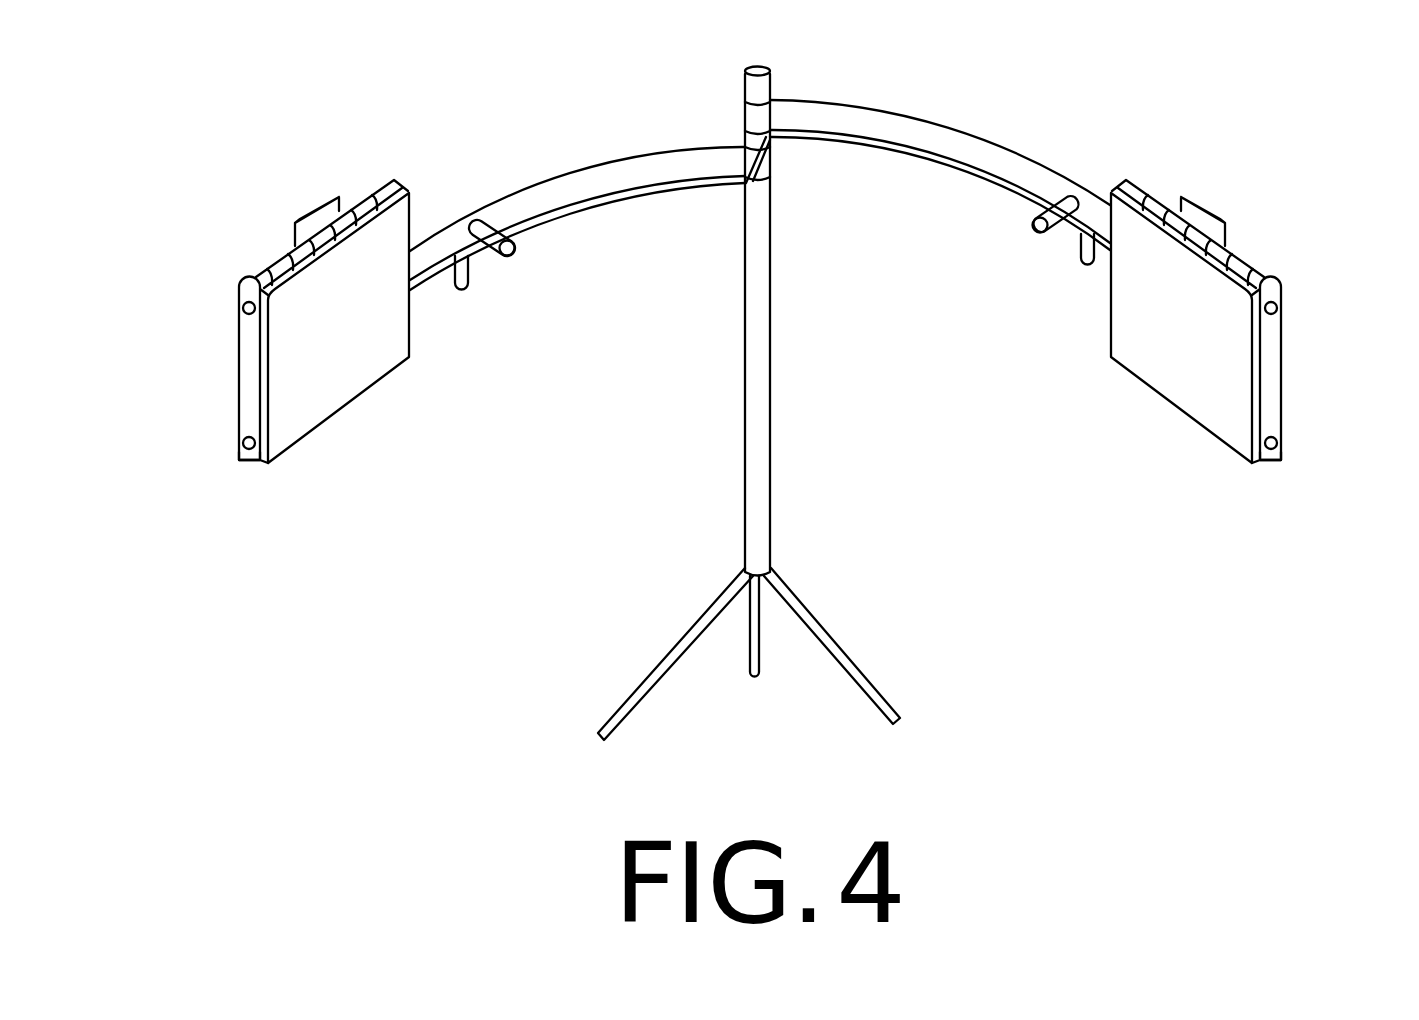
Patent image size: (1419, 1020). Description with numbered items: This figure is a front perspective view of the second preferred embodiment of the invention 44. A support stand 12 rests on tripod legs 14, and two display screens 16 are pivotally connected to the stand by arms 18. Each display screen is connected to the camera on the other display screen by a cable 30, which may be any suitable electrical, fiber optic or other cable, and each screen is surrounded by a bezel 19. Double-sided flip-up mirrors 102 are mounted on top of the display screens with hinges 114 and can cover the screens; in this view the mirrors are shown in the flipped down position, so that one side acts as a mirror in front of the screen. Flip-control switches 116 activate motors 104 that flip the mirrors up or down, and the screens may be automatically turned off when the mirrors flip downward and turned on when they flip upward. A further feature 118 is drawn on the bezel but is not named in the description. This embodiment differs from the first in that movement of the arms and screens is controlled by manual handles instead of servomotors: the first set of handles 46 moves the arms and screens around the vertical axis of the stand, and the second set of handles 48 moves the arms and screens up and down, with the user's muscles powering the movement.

The support stand 12 is at (743, 480).
The tripod legs 14 is at (855, 708).
The second preferred embodiment of the invention 44 is at (759, 64).
The arms 18 is at (572, 170).
The cable 30 is at (591, 200).
The first set of handles 46 is at (462, 291).
The second set of handles 48 is at (514, 257).
The double-sided flip-up mirrors 102 is at (352, 405).
The display screens 16 is at (238, 372).
The hinges 114 is at (255, 280).
The motors 104 is at (311, 203).
The flip-control switches 116 is at (241, 309).
The lower aperture 118 is at (241, 446).
The bezel 19 is at (247, 463).